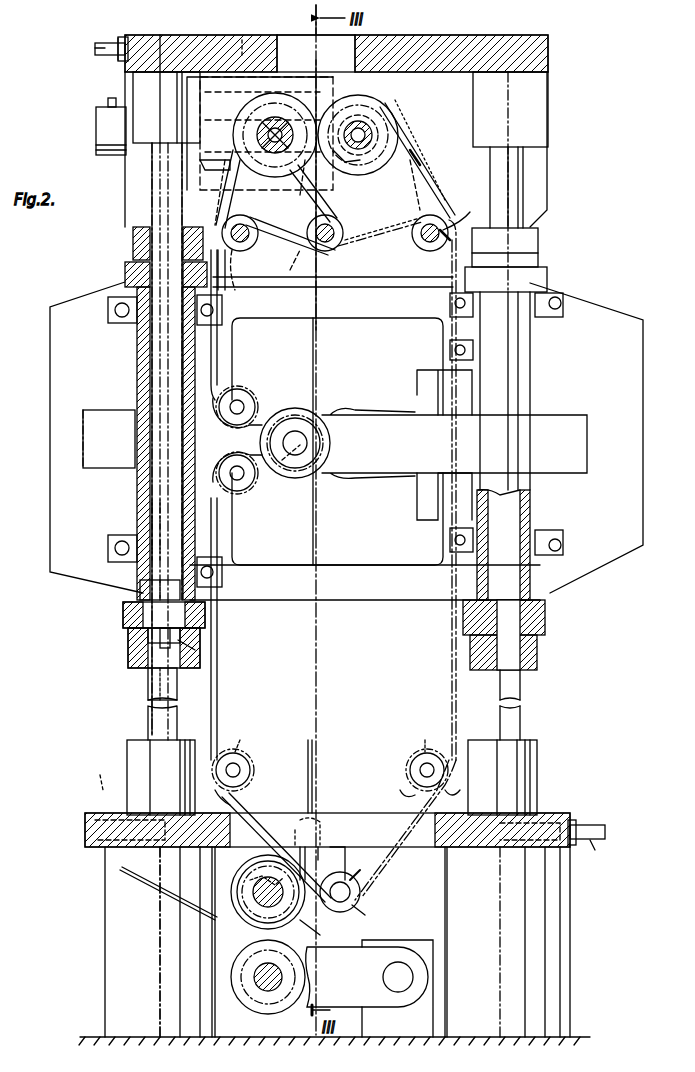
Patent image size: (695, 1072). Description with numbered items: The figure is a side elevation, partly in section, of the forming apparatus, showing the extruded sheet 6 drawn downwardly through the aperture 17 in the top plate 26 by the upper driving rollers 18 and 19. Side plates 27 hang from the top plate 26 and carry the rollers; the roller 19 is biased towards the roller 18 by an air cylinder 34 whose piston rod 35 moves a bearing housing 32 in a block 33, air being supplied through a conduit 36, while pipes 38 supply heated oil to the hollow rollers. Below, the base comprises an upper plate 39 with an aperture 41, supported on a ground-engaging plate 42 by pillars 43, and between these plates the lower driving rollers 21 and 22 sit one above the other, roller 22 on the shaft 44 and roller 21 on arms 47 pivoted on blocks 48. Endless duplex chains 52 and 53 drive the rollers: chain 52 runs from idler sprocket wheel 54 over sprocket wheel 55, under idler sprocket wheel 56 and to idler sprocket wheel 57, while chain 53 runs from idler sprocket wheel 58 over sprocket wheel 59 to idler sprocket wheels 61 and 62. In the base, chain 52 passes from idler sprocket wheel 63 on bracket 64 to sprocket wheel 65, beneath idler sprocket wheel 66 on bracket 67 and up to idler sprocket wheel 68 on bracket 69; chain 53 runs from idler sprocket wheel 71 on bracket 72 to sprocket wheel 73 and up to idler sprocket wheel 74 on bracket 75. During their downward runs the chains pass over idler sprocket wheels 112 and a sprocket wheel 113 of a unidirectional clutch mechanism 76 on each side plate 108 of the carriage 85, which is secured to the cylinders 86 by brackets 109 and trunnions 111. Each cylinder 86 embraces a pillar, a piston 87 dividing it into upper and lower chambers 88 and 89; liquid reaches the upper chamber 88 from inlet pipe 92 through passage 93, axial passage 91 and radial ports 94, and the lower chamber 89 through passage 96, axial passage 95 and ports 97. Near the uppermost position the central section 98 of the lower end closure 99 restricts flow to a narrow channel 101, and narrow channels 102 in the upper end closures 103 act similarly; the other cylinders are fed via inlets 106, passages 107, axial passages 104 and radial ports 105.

The sheet 6 is at (322, 345).
The aperture 17 is at (305, 34).
The upper driving roller 18 is at (378, 112).
The upper driving roller 19 is at (280, 165).
The lower driving roller 21 is at (245, 962).
The lower driving roller 22 is at (250, 898).
The top plate 26 is at (545, 55).
The side plate 27 is at (147, 215).
The bearing housing 32 is at (244, 40).
The block 33 is at (296, 63).
The air cylinder 34 is at (100, 125).
The piston rod 35 is at (255, 120).
The conduit 36 is at (112, 97).
The pipe 38 is at (228, 172).
The upper plate 39 is at (550, 812).
The aperture 41 is at (330, 813).
The ground-engaging plate 42 is at (140, 1035).
The pillar / shaft 43 is at (548, 905).
The shaft 44 is at (266, 871).
The arm 47 is at (385, 948).
The block 48 is at (420, 1010).
The endless duplex chain 52 is at (415, 142).
The endless duplex chain 53 is at (225, 195).
The idler sprocket wheel 54 is at (457, 213).
The sprocket wheel 55 is at (400, 125).
The idler sprocket wheel 56 is at (328, 255).
The idler sprocket wheel 57 is at (250, 247).
The idler sprocket wheel 58 is at (244, 279).
The sprocket wheel 59 is at (316, 75).
The idler sprocket wheel 61 is at (288, 279).
The idler sprocket wheel 62 is at (425, 250).
The idler sprocket wheel 63 is at (245, 765).
The bracket 64 is at (250, 790).
The sprocket wheel 65 is at (290, 835).
The idler sprocket wheel 66 is at (367, 917).
The bracket 67 is at (340, 881).
The idler sprocket wheel 68 is at (412, 762).
The bracket 69 is at (400, 790).
The idler sprocket wheel 71 is at (422, 736).
The bracket 72 is at (455, 797).
The sprocket wheel 73 is at (200, 878).
The idler sprocket wheel 74 is at (241, 736).
The bracket 75 is at (160, 790).
The unidirectional clutch mechanism 76 is at (296, 462).
The carriage 85 is at (392, 598).
The upright cylinder 86 is at (500, 412).
The piston 87 is at (145, 610).
The upper chamber 88 is at (145, 365).
The lower chamber 89 is at (140, 635).
The axial passage 91 is at (160, 523).
The inlet pipe 92 is at (96, 47).
The passage 93 is at (120, 40).
The radial port 94 is at (150, 583).
The axial passage 95 is at (148, 688).
The passage 96 is at (97, 777).
The port 97 is at (175, 635).
The central section 98 is at (200, 647).
The lower end closure 99 is at (150, 668).
The narrow channel 101 is at (150, 640).
The narrow channel 102 is at (125, 265).
The upper end closure 103 is at (133, 235).
The axial passage 104 is at (505, 757).
The radial port 105 is at (540, 625).
The inlet 106 is at (606, 853).
The passage 107 is at (590, 800).
The side plate 108 is at (346, 437).
The bracket 109 is at (108, 310).
The trunnion 111 is at (560, 323).
The idler sprocket wheel 112 is at (245, 395).
The sprocket wheel 113 is at (310, 415).